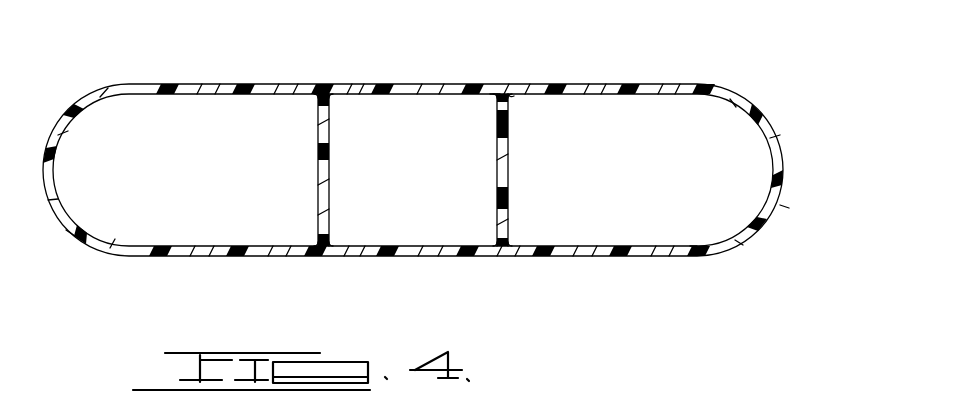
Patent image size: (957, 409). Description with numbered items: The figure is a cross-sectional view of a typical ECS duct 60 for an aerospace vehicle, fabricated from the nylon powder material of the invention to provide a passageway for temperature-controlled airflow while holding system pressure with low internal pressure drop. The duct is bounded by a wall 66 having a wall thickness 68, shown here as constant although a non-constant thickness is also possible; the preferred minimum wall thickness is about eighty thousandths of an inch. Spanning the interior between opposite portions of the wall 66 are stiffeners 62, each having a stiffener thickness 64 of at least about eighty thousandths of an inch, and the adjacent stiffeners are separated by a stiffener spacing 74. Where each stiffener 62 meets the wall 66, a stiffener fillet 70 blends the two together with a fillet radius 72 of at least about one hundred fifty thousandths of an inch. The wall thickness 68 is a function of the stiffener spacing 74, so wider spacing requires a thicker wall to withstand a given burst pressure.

The ECS duct 60 is at (797, 89).
The stiffener 62 is at (318, 218).
The stiffener thickness 64 is at (337, 162).
The wall 66 is at (690, 257).
The wall thickness 68 is at (624, 120).
The stiffener fillet 70 is at (497, 95).
The stiffener fillet radius 72 is at (508, 96).
The stiffener spacing 74 is at (503, 310).